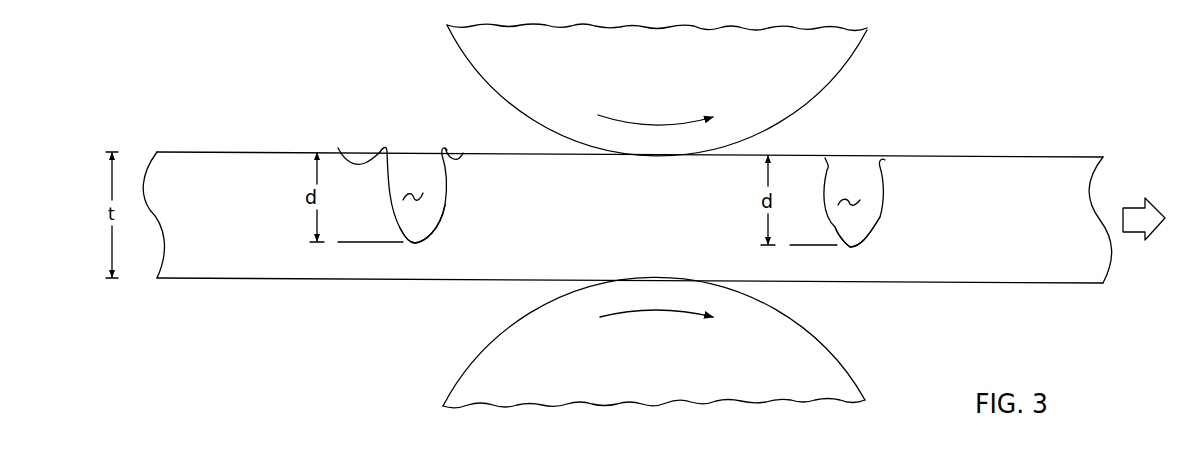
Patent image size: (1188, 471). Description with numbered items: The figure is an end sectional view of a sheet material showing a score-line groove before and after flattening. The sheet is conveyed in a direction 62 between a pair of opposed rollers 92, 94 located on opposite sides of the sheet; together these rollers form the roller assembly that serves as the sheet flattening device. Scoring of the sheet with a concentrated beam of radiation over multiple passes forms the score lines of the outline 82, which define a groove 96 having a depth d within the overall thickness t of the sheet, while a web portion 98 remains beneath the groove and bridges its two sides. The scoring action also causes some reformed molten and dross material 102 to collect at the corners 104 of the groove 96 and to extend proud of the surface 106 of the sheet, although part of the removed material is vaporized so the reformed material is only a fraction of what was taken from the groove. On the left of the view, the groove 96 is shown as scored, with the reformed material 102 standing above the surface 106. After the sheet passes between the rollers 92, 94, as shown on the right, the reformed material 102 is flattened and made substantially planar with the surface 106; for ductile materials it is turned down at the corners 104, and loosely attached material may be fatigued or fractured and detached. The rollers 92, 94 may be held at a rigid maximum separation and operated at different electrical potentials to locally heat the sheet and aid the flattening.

The direction 62 is at (1140, 222).
The outline 82 is at (418, 195).
The roller 92 is at (858, 48).
The roller 94 is at (845, 378).
The groove 96 is at (435, 228).
The web portion 98 is at (412, 260).
The reformed molten and dross material 102 is at (442, 145).
The corners 104 is at (338, 148).
The surface 106 is at (224, 152).